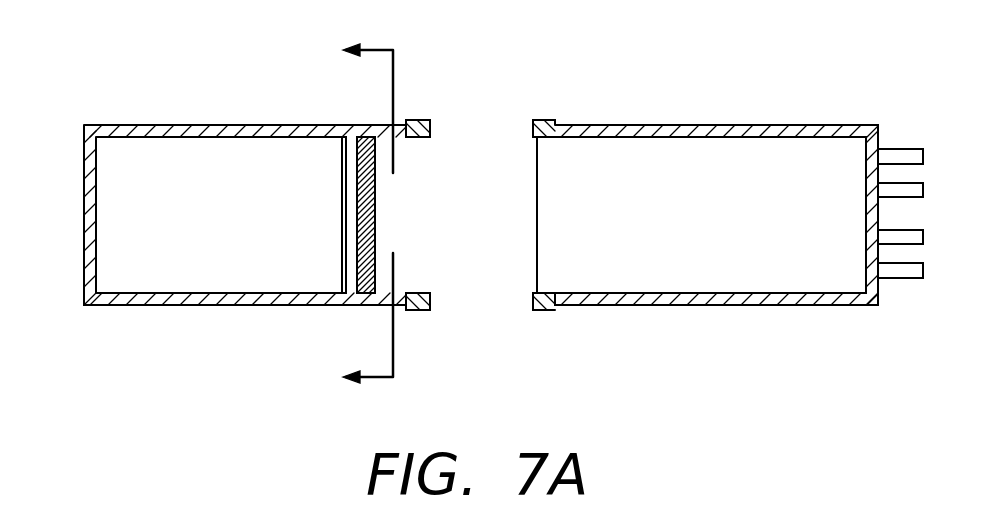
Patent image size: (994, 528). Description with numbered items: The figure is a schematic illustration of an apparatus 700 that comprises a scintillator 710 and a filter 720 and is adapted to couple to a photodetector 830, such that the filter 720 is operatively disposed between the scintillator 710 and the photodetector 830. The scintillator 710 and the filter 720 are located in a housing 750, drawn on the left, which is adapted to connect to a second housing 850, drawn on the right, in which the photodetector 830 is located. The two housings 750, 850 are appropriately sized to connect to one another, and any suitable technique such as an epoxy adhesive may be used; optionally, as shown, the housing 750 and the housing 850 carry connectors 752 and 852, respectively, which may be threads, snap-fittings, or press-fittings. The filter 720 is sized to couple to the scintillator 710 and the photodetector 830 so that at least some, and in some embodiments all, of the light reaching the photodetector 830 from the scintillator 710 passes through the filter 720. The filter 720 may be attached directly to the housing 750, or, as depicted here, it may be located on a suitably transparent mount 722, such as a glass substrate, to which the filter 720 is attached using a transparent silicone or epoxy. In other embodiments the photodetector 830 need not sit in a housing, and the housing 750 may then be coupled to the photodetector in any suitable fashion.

The apparatus 700 is at (278, 204).
The housing 750 is at (150, 124).
The connector 752 is at (412, 121).
The scintillator 710 is at (191, 269).
The filter 720 is at (343, 230).
The mount 722 is at (375, 216).
The housing 850 is at (745, 125).
The connector 852 is at (540, 120).
The photodetector 830 is at (733, 271).